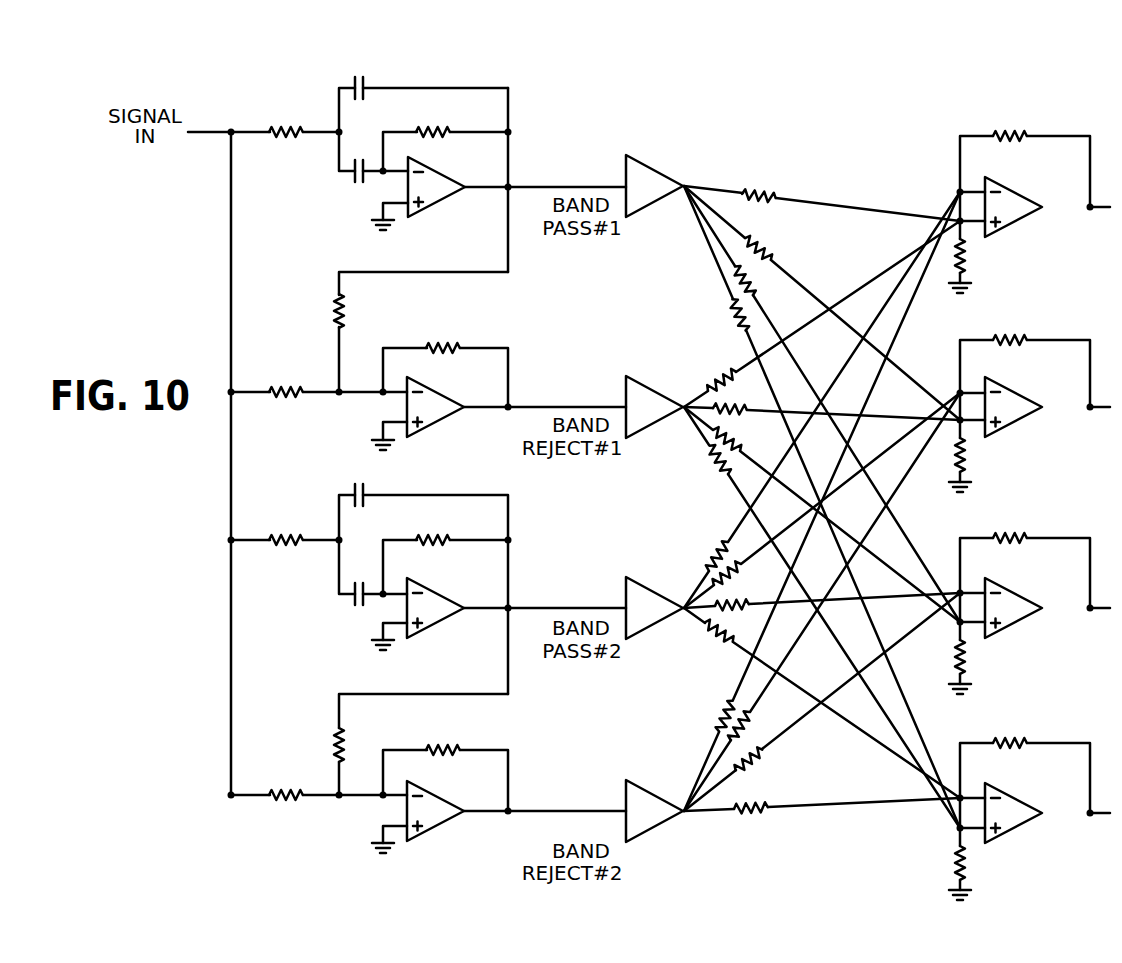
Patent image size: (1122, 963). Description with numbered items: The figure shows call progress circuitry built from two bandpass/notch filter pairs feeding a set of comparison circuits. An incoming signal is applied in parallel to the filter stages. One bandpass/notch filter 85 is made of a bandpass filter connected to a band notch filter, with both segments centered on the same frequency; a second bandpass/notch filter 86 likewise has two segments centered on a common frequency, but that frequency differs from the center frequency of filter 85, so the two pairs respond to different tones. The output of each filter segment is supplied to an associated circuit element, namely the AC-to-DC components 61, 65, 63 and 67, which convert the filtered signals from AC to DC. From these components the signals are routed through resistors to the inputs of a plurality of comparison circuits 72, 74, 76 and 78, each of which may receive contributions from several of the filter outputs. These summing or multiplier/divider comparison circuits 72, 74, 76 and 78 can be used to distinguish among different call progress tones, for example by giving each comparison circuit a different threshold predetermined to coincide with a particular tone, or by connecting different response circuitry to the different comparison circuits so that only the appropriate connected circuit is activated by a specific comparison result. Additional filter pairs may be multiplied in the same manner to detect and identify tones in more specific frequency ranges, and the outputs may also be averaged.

The bandpass/notch filter 85 is at (339, 86).
The bandpass/notch filter 86 is at (338, 494).
The AC-to-DC component 61 is at (658, 185).
The AC-to-DC component 65 is at (660, 405).
The AC-to-DC component 63 is at (646, 605).
The AC-to-DC component 67 is at (651, 808).
The comparison circuit 72 is at (960, 136).
The comparison circuit 74 is at (960, 340).
The comparison circuit 76 is at (960, 538).
The comparison circuit 78 is at (960, 743).